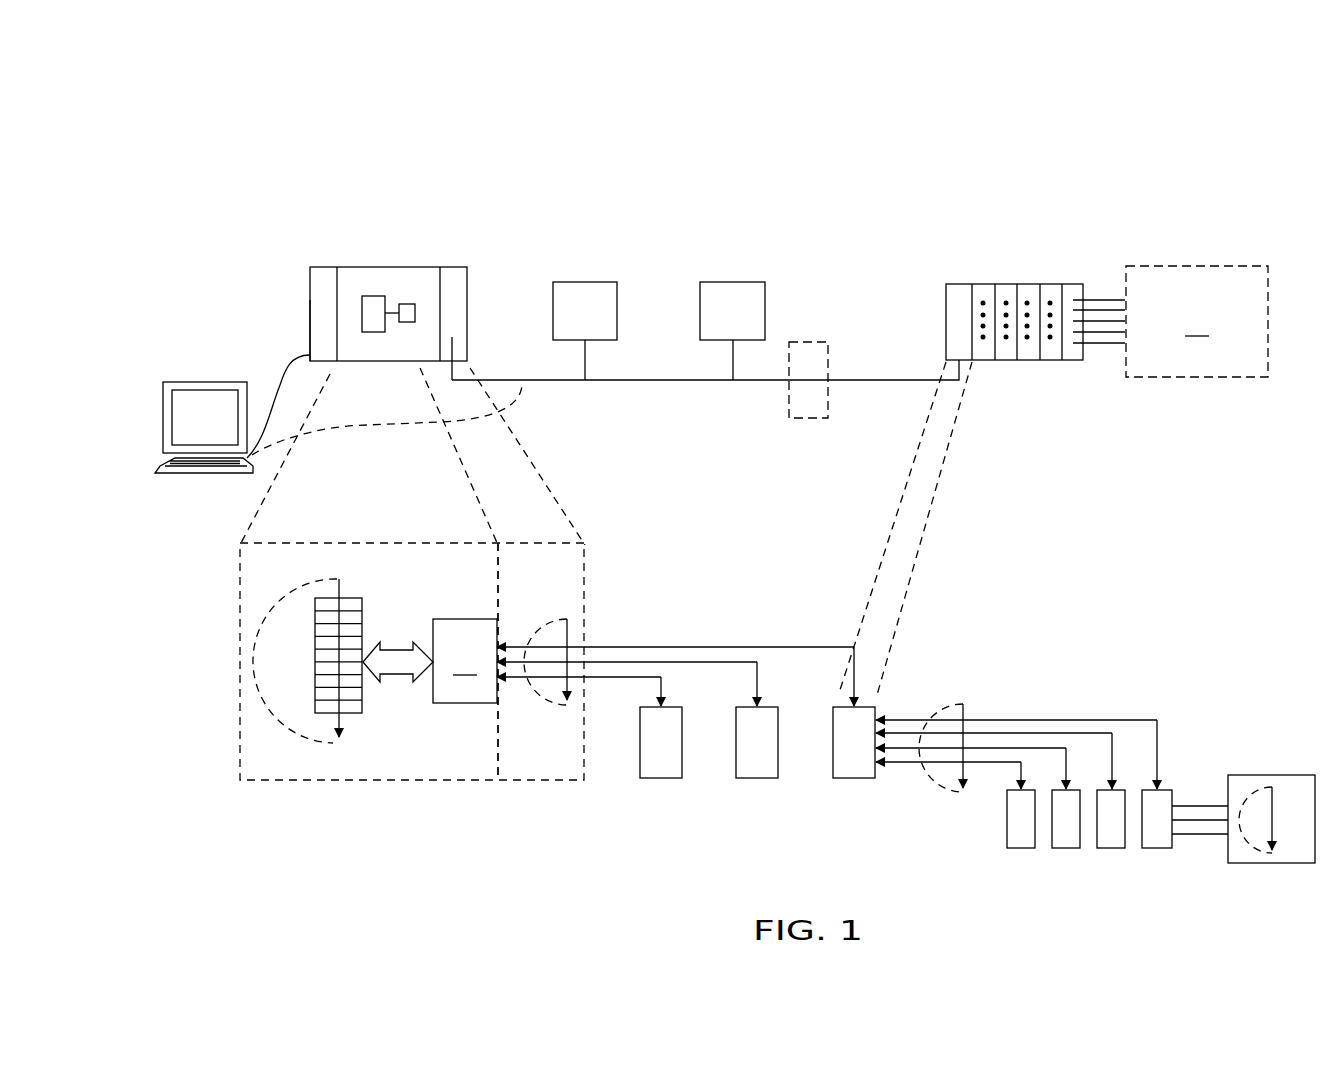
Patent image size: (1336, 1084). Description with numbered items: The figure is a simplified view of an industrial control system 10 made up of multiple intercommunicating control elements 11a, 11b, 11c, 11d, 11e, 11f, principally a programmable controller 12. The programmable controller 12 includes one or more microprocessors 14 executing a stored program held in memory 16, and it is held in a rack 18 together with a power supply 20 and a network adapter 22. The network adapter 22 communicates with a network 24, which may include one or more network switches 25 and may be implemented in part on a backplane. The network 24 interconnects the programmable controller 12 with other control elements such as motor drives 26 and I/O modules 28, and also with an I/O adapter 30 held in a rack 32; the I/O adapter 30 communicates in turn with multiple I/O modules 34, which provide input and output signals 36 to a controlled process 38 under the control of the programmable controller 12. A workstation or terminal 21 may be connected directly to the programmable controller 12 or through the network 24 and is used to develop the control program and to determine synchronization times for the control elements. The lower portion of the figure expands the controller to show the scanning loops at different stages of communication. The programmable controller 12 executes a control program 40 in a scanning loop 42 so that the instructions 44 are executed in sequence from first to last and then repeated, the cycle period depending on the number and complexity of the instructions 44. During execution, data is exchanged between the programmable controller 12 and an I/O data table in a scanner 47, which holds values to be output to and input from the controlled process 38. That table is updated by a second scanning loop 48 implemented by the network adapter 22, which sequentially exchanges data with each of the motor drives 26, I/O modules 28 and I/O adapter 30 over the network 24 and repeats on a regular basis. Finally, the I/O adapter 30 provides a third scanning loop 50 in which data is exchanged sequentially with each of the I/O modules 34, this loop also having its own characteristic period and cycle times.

The industrial control system 10 is at (1140, 183).
The control element 11a is at (402, 200).
The control element 11b is at (465, 228).
The control element 11c is at (627, 215).
The control element 11d is at (793, 222).
The control element 11e is at (960, 209).
The control element 11f is at (1015, 185).
The programmable controller 12 is at (330, 242).
The microprocessor 14 is at (405, 305).
The memory 16 is at (375, 295).
The rack 18 is at (308, 282).
The power supply 20 is at (318, 330).
The workstation or terminal 21 is at (162, 418).
The network adapter 22 is at (452, 282).
The network 24 is at (660, 383).
The network switch 25 is at (812, 420).
The motor drive 26 is at (585, 288).
The I/O module 28 is at (733, 288).
The I/O adapter 30 is at (960, 293).
The rack 32 is at (946, 310).
The I/O modules 34 is at (1072, 284).
The input and output signals 36 is at (1113, 343).
The controlled process 38 is at (1282, 775).
The control program 40 is at (357, 600).
The scanning loop 42 is at (257, 662).
The instructions 44 is at (362, 693).
The scanner 47 is at (430, 661).
The second scanning loop 48 is at (570, 630).
The third scanning loop 50 is at (967, 712).